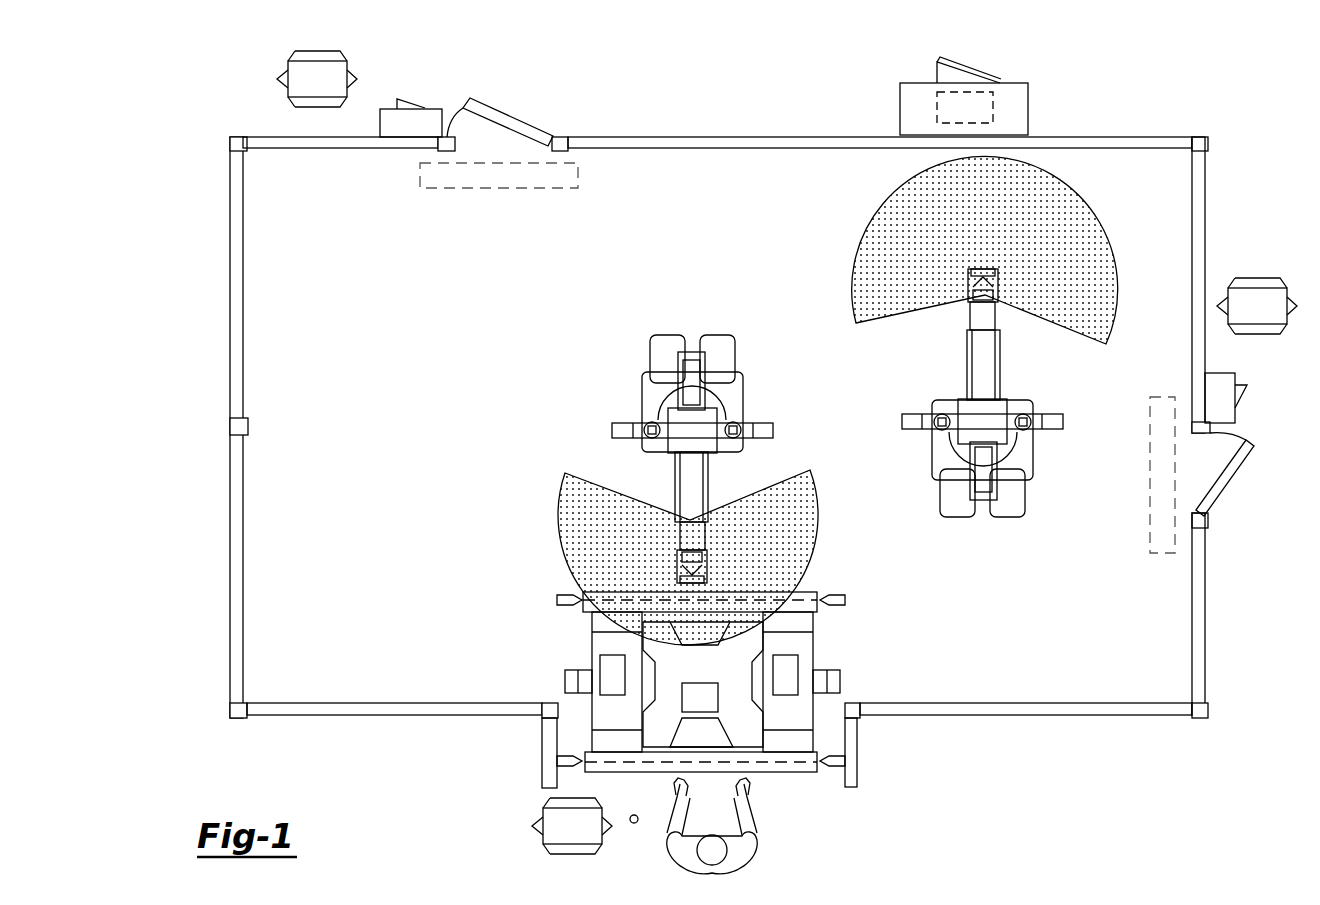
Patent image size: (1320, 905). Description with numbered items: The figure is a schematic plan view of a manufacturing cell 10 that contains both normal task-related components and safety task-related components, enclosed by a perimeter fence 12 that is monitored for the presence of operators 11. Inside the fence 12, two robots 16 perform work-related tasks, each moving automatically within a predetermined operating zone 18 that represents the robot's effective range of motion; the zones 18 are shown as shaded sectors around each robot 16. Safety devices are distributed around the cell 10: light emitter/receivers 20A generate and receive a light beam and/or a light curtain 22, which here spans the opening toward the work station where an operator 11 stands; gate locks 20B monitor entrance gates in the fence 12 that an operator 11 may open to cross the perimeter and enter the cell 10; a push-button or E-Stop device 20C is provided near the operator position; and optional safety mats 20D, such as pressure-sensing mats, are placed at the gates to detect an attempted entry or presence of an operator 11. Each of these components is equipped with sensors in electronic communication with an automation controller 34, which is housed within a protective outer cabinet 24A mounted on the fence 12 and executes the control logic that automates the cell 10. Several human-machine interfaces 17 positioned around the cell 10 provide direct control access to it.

The manufacturing cell 10 is at (180, 123).
The operator 11 is at (753, 857).
The perimeter fence 12 is at (230, 291).
The robot 16 is at (626, 360).
The human-machine interface (HMI) 17 is at (287, 63).
The operating zone 18 is at (575, 540).
The light emitter/receiver 20A is at (557, 600).
The gate lock 20B is at (498, 108).
The push-button or E-Stop device 20C is at (634, 823).
The safety mat 20D is at (483, 189).
The light curtain 22 is at (790, 772).
The protective outer cabinet 24A is at (430, 108).
The automation controller 34 is at (937, 107).